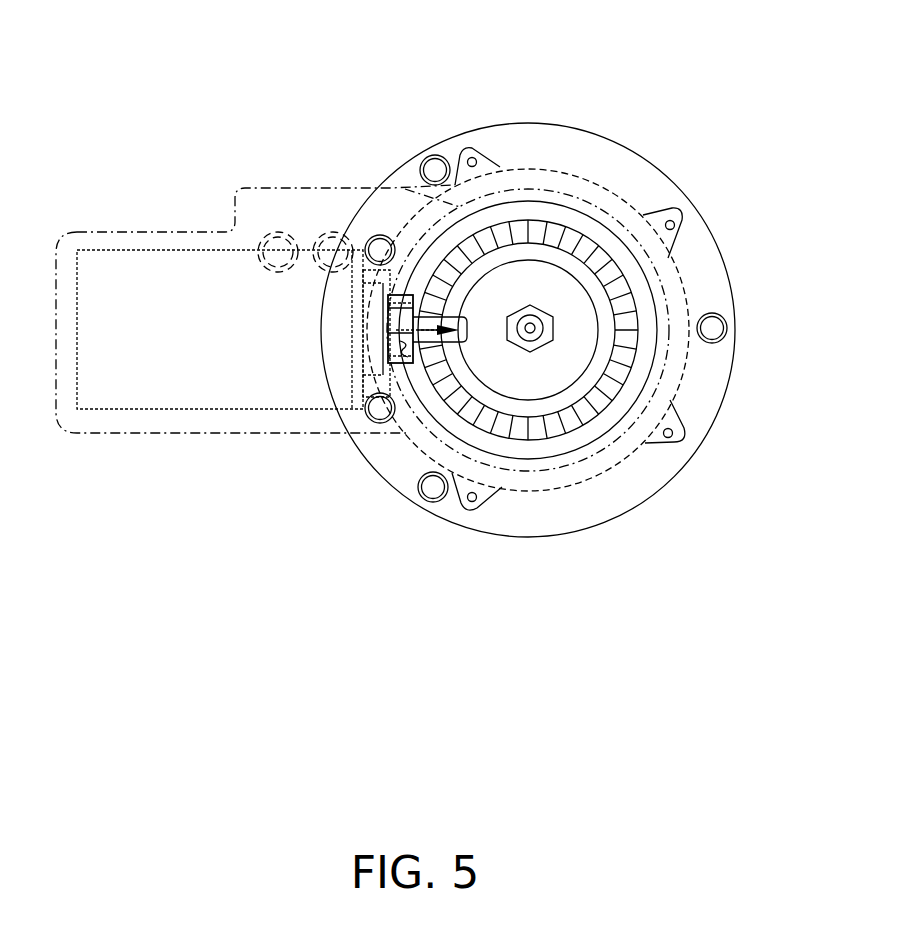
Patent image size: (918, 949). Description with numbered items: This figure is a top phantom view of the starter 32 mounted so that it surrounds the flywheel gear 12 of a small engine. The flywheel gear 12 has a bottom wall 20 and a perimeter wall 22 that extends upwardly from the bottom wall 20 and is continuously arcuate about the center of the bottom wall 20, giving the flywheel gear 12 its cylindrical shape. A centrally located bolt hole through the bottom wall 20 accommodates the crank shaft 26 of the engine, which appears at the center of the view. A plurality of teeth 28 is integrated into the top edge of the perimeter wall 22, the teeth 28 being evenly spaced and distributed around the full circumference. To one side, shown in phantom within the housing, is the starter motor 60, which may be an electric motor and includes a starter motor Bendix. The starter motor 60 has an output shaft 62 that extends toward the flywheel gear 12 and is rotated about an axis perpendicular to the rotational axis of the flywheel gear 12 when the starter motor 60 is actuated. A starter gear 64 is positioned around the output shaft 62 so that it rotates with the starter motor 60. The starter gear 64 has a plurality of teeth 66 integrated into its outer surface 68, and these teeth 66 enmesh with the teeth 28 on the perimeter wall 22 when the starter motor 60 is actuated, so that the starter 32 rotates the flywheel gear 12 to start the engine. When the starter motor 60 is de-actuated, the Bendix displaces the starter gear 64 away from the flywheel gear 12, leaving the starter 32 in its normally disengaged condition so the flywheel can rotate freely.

The flywheel gear 12 is at (574, 200).
The bottom wall 20 is at (530, 277).
The perimeter wall 22 is at (602, 247).
The crank shaft 26 is at (529, 336).
The teeth 28 is at (610, 382).
The starter 32 is at (282, 128).
The starter motor 60 is at (158, 250).
The output shaft 62 is at (450, 340).
The starter gear 64 is at (400, 392).
The teeth 66 is at (397, 322).
The outer surface 68 is at (397, 352).